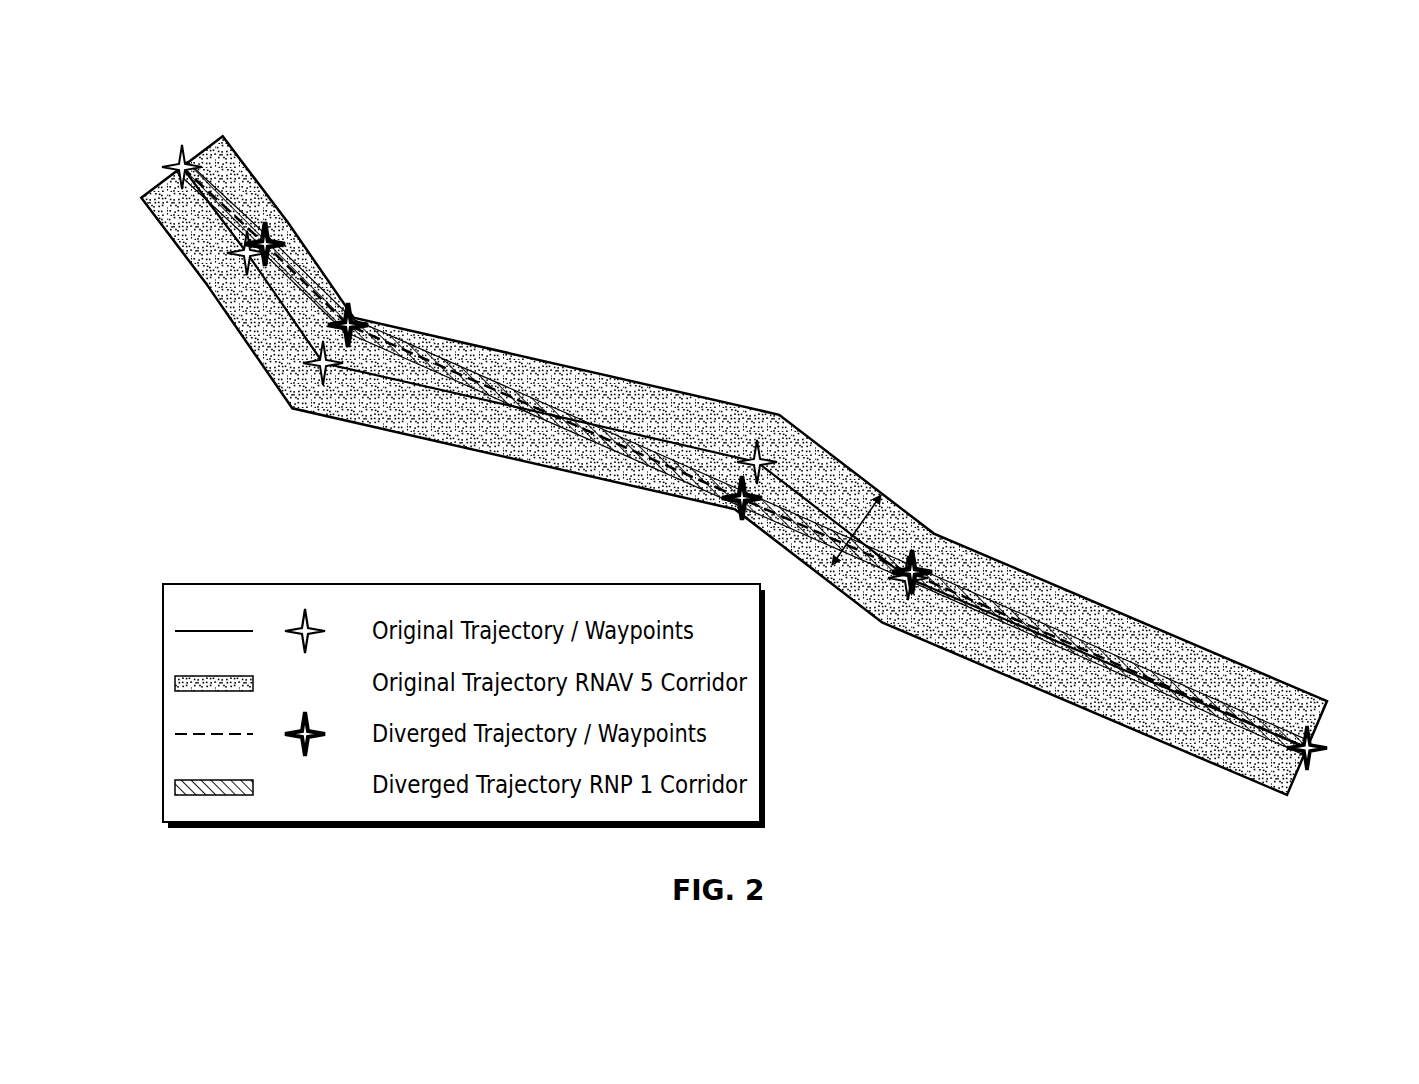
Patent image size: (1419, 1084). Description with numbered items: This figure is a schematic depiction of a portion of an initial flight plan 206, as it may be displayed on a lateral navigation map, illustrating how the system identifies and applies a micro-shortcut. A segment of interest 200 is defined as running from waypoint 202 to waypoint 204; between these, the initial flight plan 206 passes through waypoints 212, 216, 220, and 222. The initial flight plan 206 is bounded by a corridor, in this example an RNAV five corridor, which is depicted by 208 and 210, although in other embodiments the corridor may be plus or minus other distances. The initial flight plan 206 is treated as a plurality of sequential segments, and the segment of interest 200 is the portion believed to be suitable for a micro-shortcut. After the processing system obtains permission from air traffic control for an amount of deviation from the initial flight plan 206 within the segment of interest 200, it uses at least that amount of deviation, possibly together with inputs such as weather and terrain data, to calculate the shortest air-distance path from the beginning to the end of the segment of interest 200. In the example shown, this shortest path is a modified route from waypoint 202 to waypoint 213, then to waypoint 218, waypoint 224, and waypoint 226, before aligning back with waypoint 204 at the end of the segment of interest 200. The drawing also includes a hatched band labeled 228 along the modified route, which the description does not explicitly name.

The segment of interest 200 is at (816, 207).
The waypoint 202 is at (1312, 752).
The waypoint 204 is at (180, 166).
The initial flight plan 206 is at (823, 505).
The RNAV 5 corridor 208 is at (870, 512).
The RNAV 5 corridor 210 is at (838, 570).
The waypoint 212 is at (916, 570).
The waypoint 213 is at (906, 592).
The waypoint 216 is at (752, 460).
The waypoint 218 is at (738, 500).
The waypoint 220 is at (320, 365).
The waypoint 222 is at (245, 255).
The waypoint 224 is at (352, 324).
The waypoint 226 is at (270, 242).
The diverged trajectory RNP 1 corridor 228 is at (405, 396).